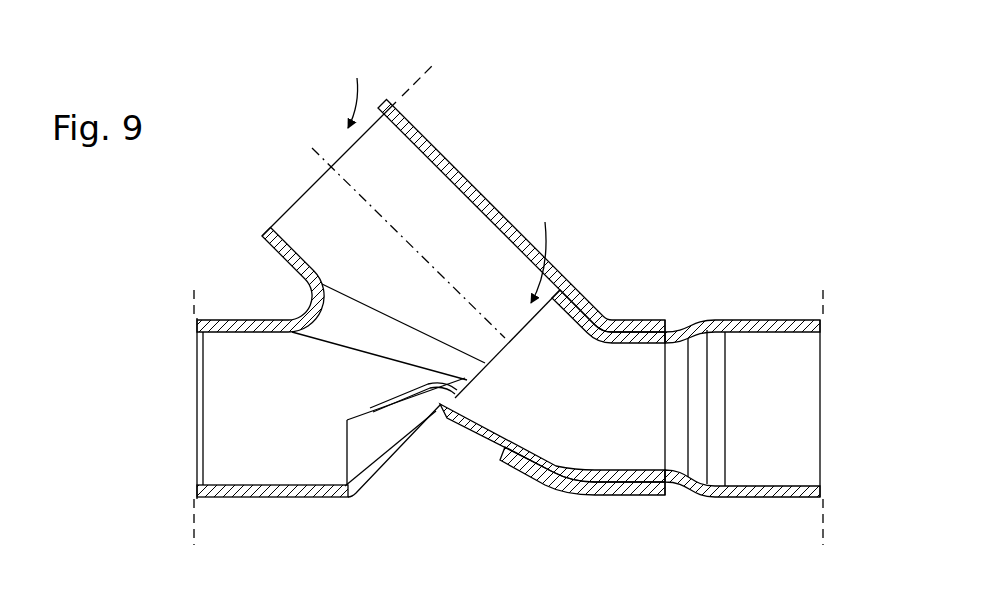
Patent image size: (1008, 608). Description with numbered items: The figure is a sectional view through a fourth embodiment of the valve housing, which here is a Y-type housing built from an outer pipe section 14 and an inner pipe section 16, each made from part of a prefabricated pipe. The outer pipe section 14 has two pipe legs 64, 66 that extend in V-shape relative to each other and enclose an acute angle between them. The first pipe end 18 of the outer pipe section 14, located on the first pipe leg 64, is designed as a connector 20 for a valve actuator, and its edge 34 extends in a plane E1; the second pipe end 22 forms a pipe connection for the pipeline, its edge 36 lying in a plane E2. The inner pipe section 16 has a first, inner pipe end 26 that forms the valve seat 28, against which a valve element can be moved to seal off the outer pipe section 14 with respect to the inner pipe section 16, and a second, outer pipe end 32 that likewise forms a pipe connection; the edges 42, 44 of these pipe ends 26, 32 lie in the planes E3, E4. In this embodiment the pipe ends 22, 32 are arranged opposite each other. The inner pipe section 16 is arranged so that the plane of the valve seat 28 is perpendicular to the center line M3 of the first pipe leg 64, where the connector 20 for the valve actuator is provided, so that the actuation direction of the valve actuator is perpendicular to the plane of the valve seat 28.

The outer pipe section 14 is at (786, 497).
The inner pipe section 16 is at (395, 458).
The first pipe end 18 is at (410, 133).
The connector 20 is at (357, 91).
The second pipe end 22 is at (214, 497).
The first, inner pipe end 26 is at (558, 286).
The valve seat 28 is at (543, 250).
The second, outer pipe end 32 is at (792, 320).
The edge 34 is at (197, 489).
The edge 36 is at (262, 234).
The edge 42 is at (822, 323).
The edge 44 is at (437, 416).
The first pipe leg 64 is at (463, 188).
The pipe leg 66 is at (315, 497).
The plane E1 is at (195, 535).
The plane E2 is at (405, 82).
The plane E3 is at (822, 528).
The plane E4 is at (586, 259).
The center line M3 is at (295, 133).